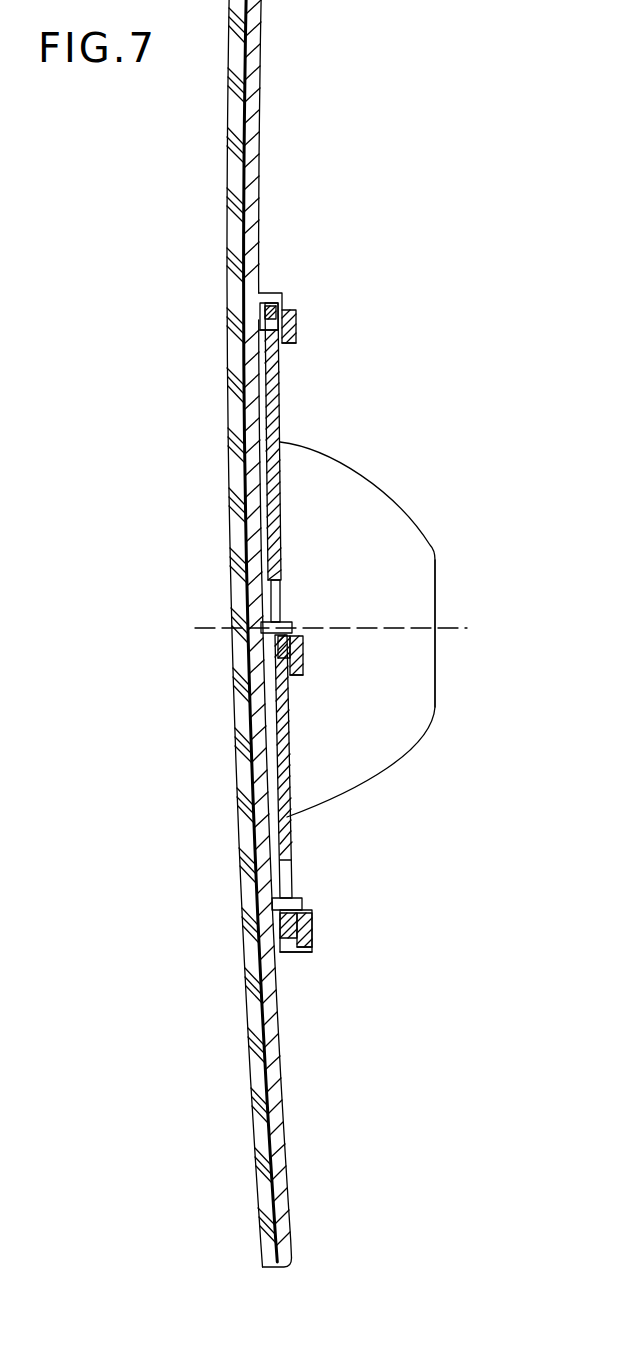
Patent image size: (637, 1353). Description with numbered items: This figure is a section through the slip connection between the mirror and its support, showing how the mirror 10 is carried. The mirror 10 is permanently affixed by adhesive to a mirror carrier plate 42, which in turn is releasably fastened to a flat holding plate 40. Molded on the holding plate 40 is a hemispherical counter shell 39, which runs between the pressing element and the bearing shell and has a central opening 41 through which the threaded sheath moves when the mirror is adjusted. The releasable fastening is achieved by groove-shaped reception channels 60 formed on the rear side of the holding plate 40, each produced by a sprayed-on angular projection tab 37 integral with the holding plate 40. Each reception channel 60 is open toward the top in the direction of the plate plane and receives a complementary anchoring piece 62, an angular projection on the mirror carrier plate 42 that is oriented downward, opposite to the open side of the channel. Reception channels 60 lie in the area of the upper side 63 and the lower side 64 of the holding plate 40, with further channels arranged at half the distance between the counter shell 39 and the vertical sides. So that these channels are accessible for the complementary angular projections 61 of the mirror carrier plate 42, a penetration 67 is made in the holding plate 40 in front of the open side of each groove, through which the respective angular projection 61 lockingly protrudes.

The mirror pane 10 is at (237, 155).
The angular projection tab 37 is at (296, 330).
The hemispherical counter shell 39 is at (383, 520).
The holding plate 40 is at (282, 413).
The central opening 41 is at (440, 590).
The mirror carrier plate 42 is at (283, 1112).
The reception channel 60 is at (284, 345).
The angular projection 61 is at (263, 303).
The anchoring piece 62 is at (278, 317).
The upper side 63 is at (265, 330).
The lower side 64 is at (295, 942).
The penetration 67 is at (278, 592).